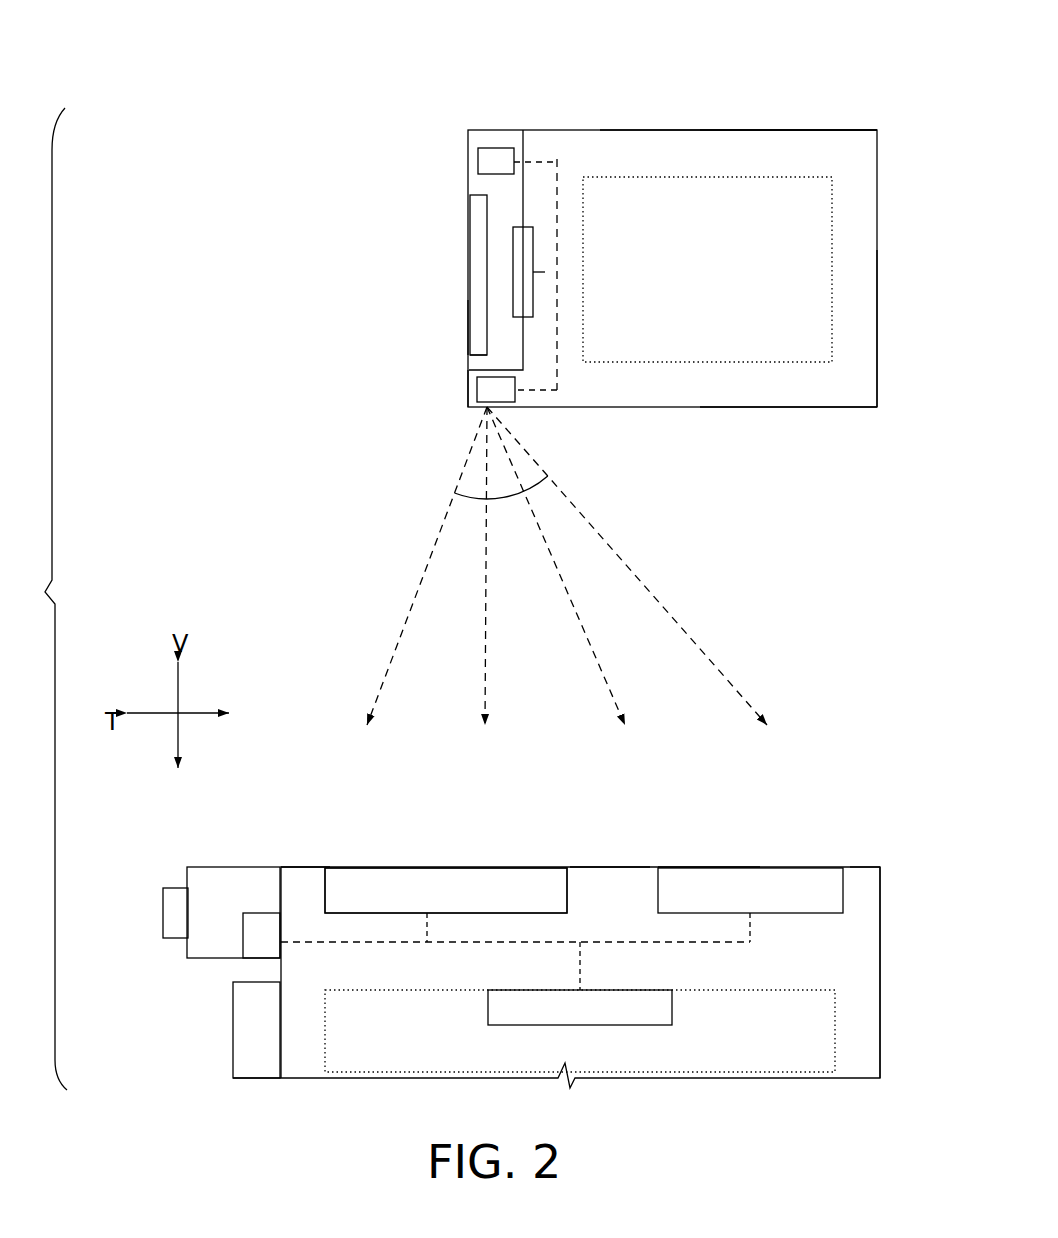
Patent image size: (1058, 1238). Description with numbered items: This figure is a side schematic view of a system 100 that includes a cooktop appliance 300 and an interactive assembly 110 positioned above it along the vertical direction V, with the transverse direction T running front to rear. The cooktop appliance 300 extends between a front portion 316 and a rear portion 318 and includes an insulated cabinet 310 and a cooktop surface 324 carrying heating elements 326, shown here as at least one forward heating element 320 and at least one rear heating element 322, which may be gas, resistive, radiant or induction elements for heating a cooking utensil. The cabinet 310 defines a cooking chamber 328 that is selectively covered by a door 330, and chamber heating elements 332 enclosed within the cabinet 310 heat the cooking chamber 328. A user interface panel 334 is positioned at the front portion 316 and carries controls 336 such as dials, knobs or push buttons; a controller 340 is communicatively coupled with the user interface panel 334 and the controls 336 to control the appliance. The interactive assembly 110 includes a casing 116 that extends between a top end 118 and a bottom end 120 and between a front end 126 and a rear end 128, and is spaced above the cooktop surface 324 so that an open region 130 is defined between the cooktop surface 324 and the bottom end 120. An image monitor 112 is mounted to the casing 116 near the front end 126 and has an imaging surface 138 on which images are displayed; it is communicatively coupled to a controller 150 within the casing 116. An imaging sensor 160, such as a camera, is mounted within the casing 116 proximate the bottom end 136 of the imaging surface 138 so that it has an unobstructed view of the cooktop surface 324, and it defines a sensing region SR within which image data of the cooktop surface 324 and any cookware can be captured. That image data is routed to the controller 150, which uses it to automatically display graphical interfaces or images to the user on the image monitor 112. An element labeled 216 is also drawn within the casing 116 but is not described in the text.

The system 100 is at (594, 268).
The interactive assembly 110 is at (884, 227).
The image monitor 112 is at (468, 282).
The casing 116 is at (845, 143).
The top end 118 is at (759, 128).
The bottom end 120 is at (791, 410).
The front end 126 is at (465, 392).
The rear end 128 is at (884, 379).
The open region 130 is at (595, 930).
The bottom end of imaging surface 136 is at (465, 356).
The imaging surface 138 is at (466, 328).
The controller 150 is at (495, 148).
The imaging sensor 160 is at (490, 403).
The flash module 216 is at (534, 240).
The sensing region SR is at (567, 566).
The cooktop appliance 300 is at (885, 962).
The cabinet 310 is at (870, 1053).
The front portion 316 is at (313, 846).
The rear portion 318 is at (886, 845).
The forward heating element 320 is at (502, 879).
The rear heating element 322 is at (715, 866).
The cooktop surface 324 is at (608, 865).
The heating elements 326 is at (370, 880).
The cooking chamber 328 is at (733, 1062).
The door 330 is at (247, 1050).
The chamber heating elements 332 is at (490, 1008).
The user interface panel 334 is at (187, 883).
The controls 336 is at (163, 922).
The controller 340 is at (253, 947).